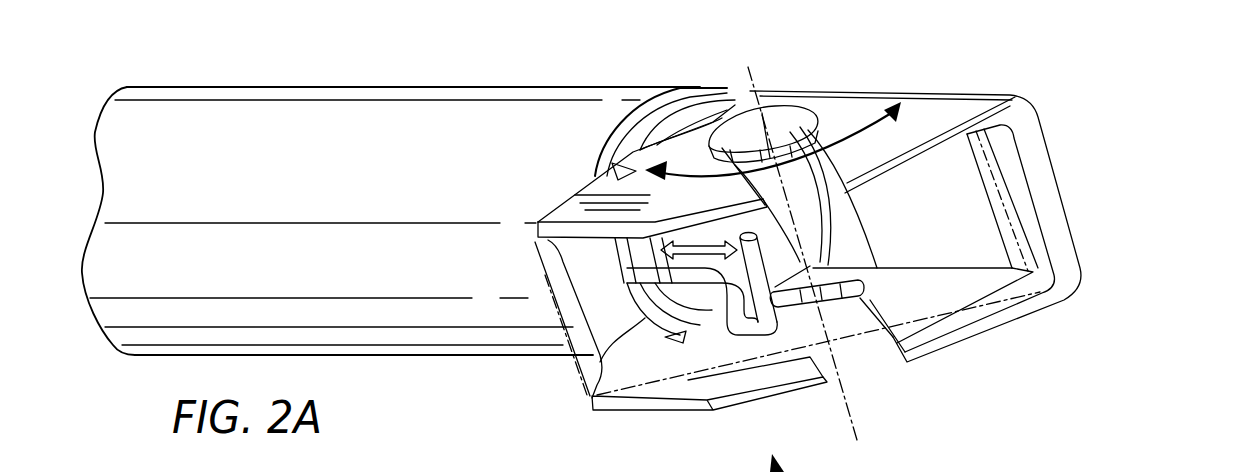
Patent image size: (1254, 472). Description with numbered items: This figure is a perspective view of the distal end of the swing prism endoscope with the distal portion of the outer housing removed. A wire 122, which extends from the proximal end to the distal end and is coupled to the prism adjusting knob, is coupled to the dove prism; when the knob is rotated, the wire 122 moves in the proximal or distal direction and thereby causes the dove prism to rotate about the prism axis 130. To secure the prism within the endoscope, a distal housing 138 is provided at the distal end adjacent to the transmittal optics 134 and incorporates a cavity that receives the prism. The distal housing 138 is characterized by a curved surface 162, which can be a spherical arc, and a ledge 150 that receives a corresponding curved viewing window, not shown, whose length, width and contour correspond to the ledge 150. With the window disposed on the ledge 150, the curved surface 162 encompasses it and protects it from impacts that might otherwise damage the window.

The wire 122 is at (605, 343).
The prism axis 130 is at (758, 75).
The transmittal optics 134 is at (793, 219).
The distal housing 138 is at (997, 100).
The ledge 150 is at (1000, 212).
The curved surface 162 is at (1022, 125).